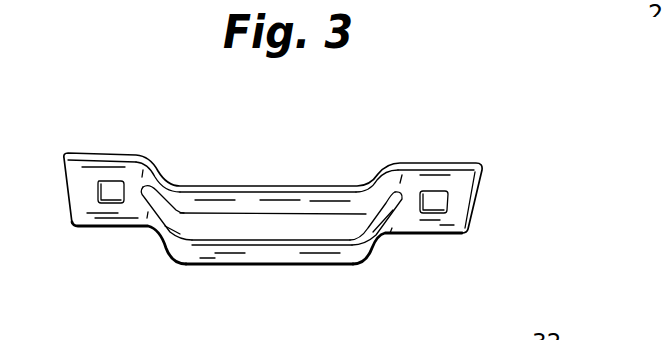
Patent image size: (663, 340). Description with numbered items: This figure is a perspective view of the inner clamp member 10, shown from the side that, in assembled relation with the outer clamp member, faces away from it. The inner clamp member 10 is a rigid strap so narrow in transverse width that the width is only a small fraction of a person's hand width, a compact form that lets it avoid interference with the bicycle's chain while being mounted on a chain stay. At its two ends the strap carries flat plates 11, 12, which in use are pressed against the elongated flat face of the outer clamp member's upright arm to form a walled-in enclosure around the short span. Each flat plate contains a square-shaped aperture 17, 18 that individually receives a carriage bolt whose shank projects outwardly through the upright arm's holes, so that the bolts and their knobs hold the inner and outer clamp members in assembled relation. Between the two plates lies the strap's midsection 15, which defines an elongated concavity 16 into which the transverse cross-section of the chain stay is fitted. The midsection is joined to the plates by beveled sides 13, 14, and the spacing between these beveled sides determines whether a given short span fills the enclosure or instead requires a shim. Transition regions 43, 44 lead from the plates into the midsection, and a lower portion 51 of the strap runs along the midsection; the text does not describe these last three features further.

The inner clamp member 10 is at (480, 225).
The flat plate 11 is at (83, 217).
The flat plate 12 is at (463, 192).
The beveled side 13 is at (163, 233).
The beveled side 14 is at (379, 244).
The midsection 15 is at (277, 252).
The elongated concavity 16 is at (310, 185).
The square-shaped aperture 17 is at (110, 182).
The square-shaped aperture 18 is at (432, 192).
The first step portion 43 is at (180, 177).
The second step portion 44 is at (367, 183).
The lower flange 51 is at (207, 255).